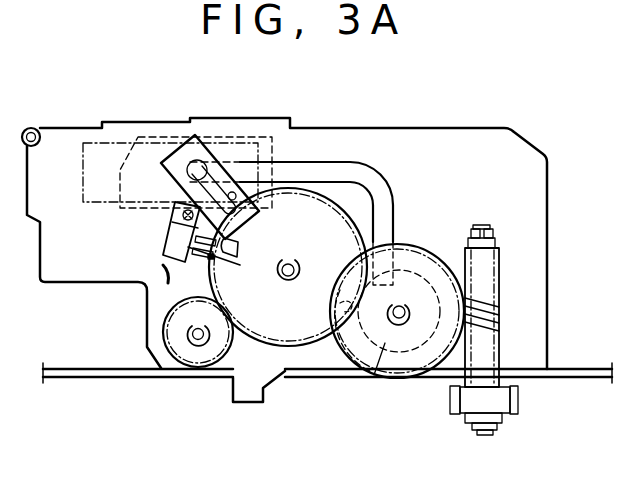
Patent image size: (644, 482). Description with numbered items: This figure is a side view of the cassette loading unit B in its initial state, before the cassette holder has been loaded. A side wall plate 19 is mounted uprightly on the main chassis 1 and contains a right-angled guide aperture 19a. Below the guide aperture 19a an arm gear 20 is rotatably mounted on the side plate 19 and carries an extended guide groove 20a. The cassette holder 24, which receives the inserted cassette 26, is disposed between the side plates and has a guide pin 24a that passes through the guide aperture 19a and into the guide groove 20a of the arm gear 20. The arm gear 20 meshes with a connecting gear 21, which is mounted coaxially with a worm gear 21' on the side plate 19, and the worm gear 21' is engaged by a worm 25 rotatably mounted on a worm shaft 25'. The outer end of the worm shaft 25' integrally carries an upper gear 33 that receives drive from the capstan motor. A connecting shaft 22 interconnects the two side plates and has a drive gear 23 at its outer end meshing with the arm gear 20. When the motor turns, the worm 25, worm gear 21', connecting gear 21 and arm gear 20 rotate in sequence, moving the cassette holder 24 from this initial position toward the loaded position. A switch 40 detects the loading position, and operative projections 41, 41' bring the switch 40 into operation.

The cassette loading unit B is at (522, 134).
The main chassis 1 is at (112, 378).
The side wall plate 19 is at (450, 137).
The guide aperture 19a is at (350, 163).
The arm gear 20 is at (290, 346).
The guide groove 20a is at (258, 168).
The connecting gear 21 is at (397, 353).
The worm gear 21' is at (387, 366).
The connecting shaft 22 is at (194, 338).
The drive gear 23 is at (208, 354).
The cassette holder 24 is at (254, 137).
The guide pin 24a is at (200, 158).
The worm 25 is at (543, 307).
The worm shaft 25' is at (548, 204).
The cassette 26 is at (117, 143).
The upper gear 33 is at (518, 402).
The switch 40 is at (160, 284).
The operative projection 41 is at (255, 234).
The operative projection 41' is at (318, 319).